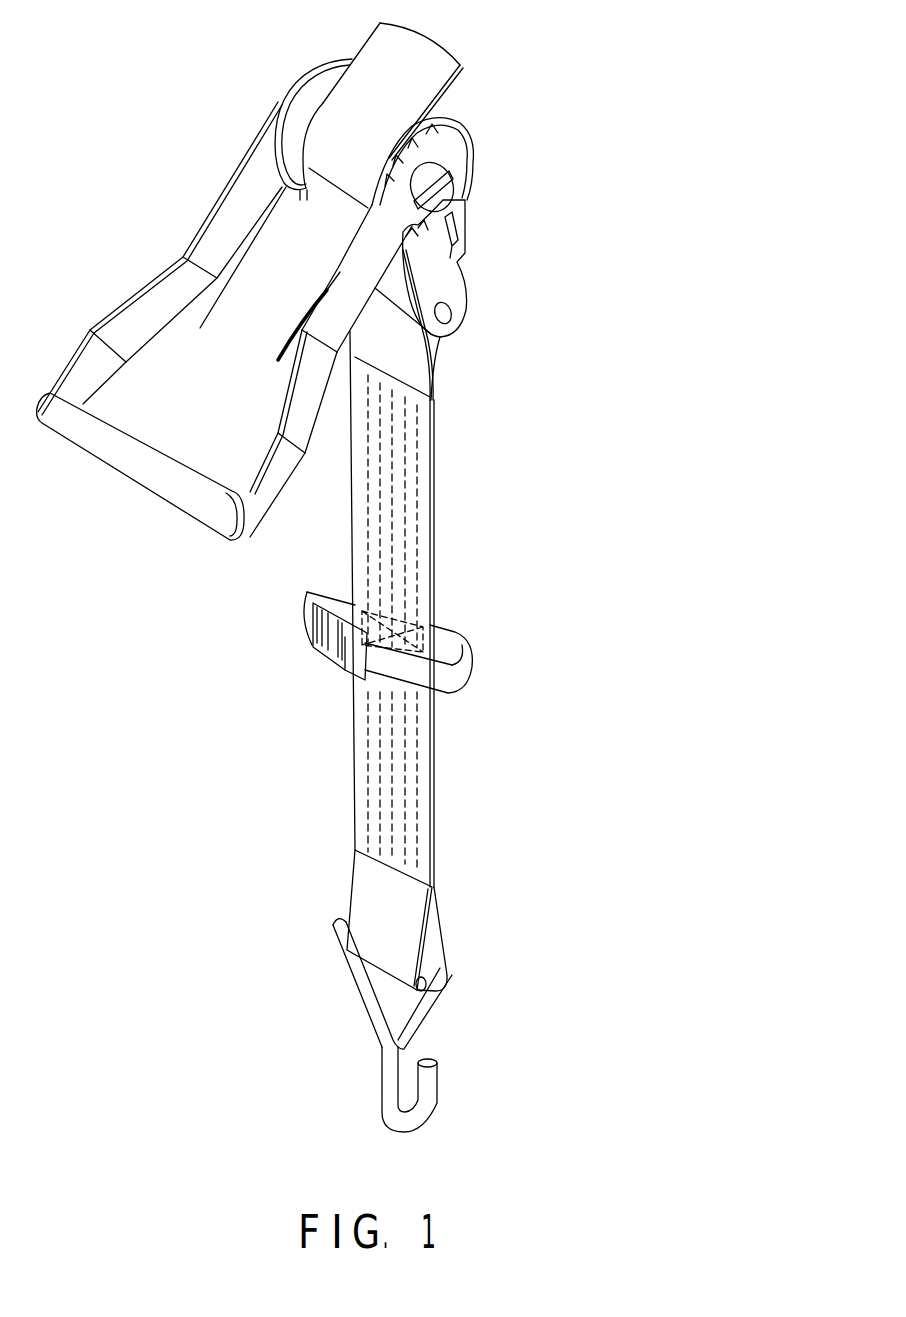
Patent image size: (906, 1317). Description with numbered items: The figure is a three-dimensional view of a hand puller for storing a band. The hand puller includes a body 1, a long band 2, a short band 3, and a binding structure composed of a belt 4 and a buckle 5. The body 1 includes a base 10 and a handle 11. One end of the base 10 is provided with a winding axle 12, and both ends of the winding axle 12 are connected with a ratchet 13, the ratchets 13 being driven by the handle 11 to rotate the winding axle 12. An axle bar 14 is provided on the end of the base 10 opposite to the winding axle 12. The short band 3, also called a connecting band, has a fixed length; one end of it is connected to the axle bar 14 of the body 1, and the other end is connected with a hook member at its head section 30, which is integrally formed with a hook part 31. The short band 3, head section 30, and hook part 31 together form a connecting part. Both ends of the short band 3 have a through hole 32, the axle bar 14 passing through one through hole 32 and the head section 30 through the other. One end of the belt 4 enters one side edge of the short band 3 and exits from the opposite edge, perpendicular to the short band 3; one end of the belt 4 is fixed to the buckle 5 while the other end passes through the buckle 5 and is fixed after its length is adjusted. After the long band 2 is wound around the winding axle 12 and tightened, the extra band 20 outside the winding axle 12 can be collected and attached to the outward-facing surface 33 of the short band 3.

The body 1 is at (478, 126).
The long band 2 is at (375, 60).
The short band 3 is at (421, 523).
The belt 4 is at (450, 647).
The buckle 5 is at (311, 659).
The base 10 is at (452, 280).
The handle 11 is at (227, 222).
The winding axle 12 is at (444, 163).
The ratchet 13 is at (278, 100).
The axle bar 14 is at (451, 315).
The extra band 20 is at (247, 340).
The head section 30 is at (427, 1007).
The hook part 31 is at (427, 1073).
The through hole 32 is at (434, 370).
The surface 33 is at (386, 531).